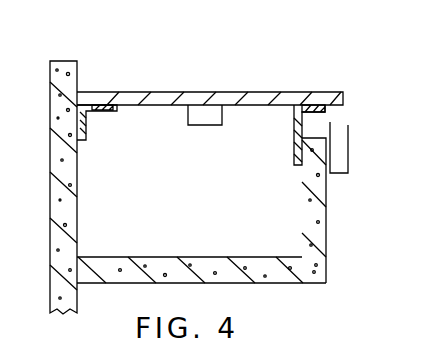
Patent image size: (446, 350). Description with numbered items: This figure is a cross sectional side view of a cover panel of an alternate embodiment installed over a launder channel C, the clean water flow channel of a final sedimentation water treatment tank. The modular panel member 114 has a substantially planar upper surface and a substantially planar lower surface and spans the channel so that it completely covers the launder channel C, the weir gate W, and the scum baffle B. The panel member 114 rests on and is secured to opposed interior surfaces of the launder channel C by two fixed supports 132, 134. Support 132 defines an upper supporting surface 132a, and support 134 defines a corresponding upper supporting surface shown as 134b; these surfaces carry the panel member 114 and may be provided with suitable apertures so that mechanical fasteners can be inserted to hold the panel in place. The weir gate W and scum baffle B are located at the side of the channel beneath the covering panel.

The modular panel member 114 is at (189, 100).
The fixed support 132 is at (86, 133).
The upper supporting surface 132a is at (106, 106).
The fixed support 134 is at (296, 133).
The bracket flange portion 134b is at (309, 107).
The weir gate W is at (330, 124).
The launder channel C is at (182, 257).
The scum baffle B is at (349, 149).